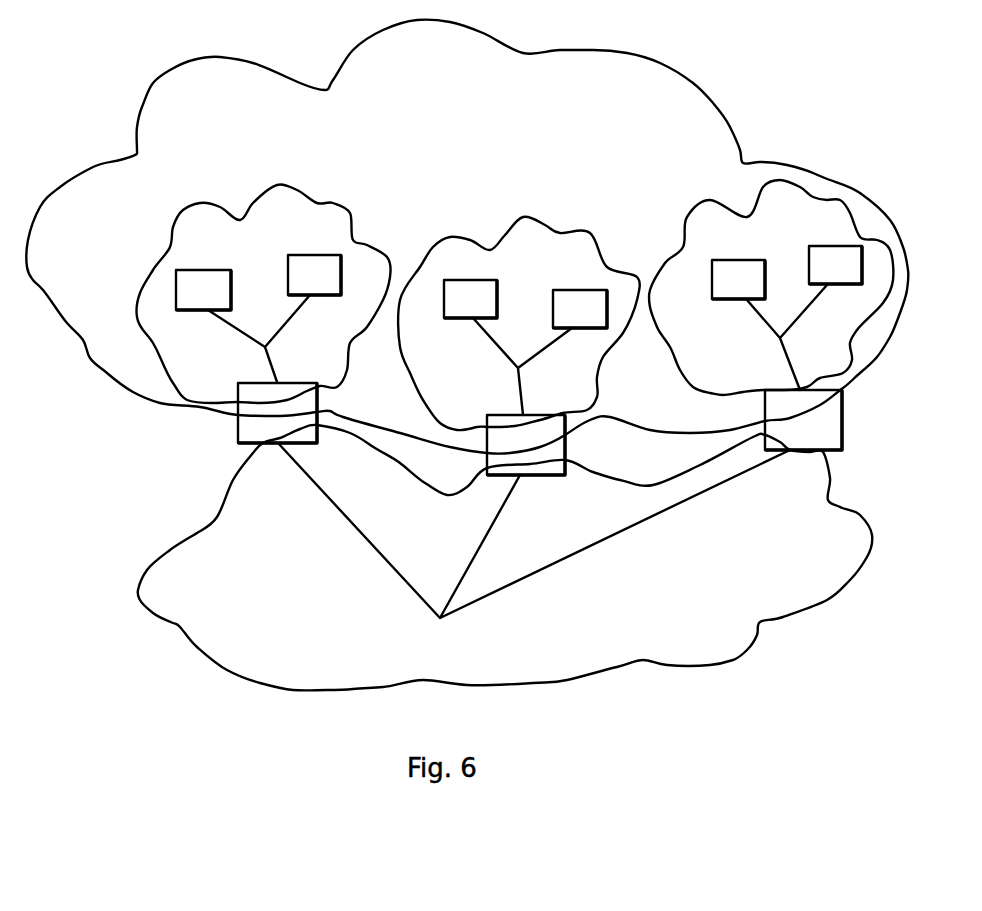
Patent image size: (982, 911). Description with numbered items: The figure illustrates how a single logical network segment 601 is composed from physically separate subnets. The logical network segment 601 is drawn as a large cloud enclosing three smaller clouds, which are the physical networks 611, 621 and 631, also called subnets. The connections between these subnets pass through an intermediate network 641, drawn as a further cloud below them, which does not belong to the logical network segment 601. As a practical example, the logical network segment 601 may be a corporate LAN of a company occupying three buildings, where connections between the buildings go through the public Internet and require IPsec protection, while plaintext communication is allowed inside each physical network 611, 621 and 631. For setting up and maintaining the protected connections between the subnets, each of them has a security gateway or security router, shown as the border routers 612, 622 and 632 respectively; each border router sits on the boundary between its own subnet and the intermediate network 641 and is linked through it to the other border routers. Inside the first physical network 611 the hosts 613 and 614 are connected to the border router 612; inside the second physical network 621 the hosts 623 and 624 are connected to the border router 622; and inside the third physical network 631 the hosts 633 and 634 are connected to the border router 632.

The logical network segment 601 is at (593, 50).
The physical network 611 is at (328, 202).
The border router 612 is at (237, 430).
The host 613 is at (187, 267).
The host 614 is at (328, 255).
The physical network 621 is at (523, 218).
The border router 622 is at (567, 449).
The host 623 is at (458, 322).
The host 624 is at (580, 288).
The physical network 631 is at (710, 200).
The border router 632 is at (843, 434).
The host 633 is at (725, 260).
The host 634 is at (842, 246).
The intermediate network 641 is at (335, 690).